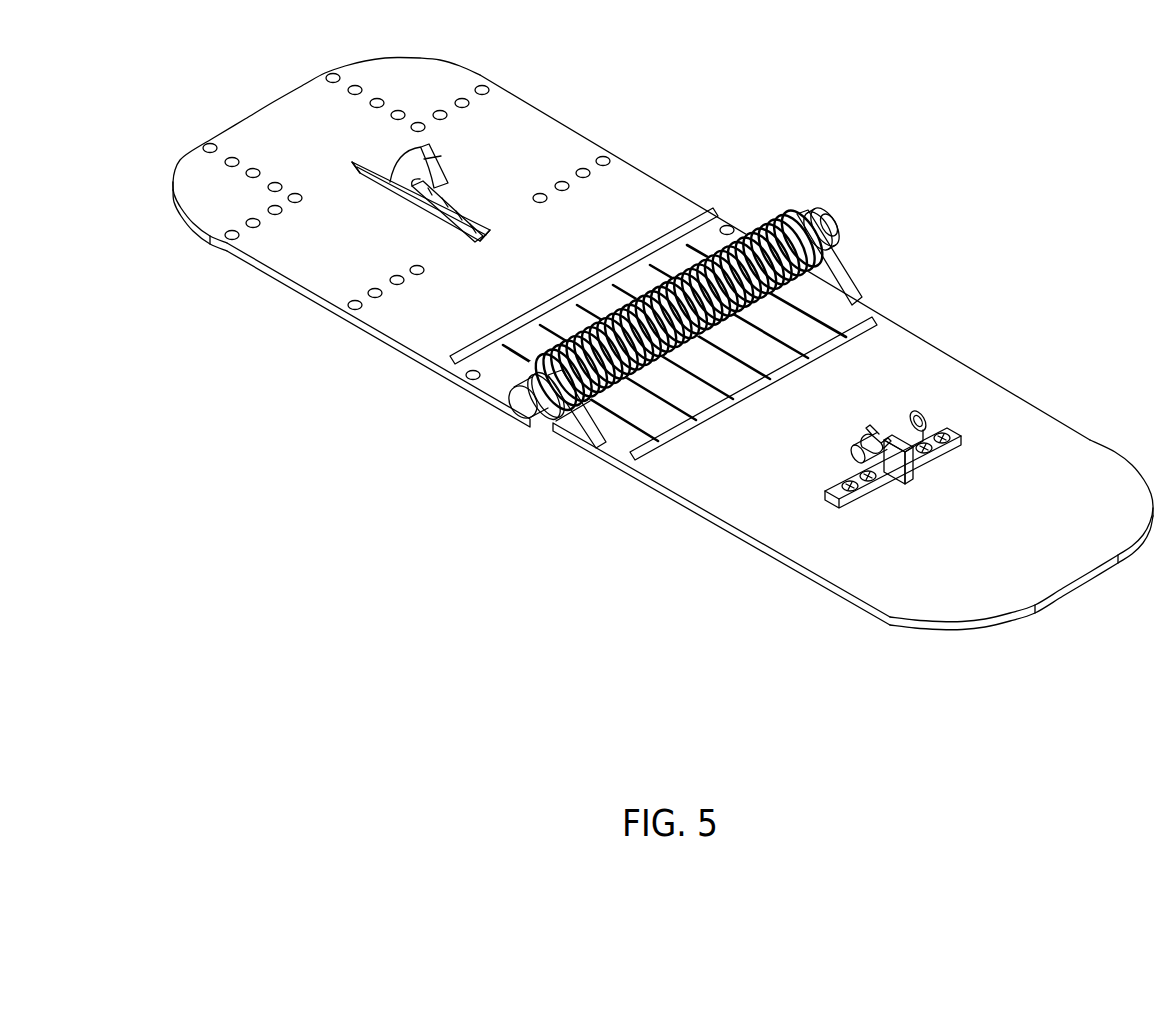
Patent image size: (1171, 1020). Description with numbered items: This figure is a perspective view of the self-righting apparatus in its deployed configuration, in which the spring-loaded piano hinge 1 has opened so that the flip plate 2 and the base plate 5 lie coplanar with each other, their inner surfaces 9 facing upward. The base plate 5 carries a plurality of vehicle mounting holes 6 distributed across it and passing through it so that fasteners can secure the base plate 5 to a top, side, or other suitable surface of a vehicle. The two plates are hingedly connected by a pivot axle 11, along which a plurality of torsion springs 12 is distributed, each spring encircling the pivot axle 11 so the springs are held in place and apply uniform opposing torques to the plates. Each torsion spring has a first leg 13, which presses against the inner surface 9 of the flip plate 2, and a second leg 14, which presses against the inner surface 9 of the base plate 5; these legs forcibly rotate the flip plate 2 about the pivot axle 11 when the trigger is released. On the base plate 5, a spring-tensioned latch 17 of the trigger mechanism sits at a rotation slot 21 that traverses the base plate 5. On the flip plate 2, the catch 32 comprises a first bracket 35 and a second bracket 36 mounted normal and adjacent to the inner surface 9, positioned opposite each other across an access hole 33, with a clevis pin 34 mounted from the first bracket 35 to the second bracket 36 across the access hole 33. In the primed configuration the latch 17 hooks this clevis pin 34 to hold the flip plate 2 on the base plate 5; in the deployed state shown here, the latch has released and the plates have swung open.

The spring-loaded piano hinge 1 is at (907, 101).
The flip plate 2 is at (1100, 381).
The base plate 5 is at (243, 71).
The plurality of vehicle mounting holes 6 is at (266, 203).
The inner surface 9 is at (368, 231).
The pivot axle 11 is at (529, 412).
The plurality of torsion springs 12 is at (540, 337).
The first leg 13 is at (863, 306).
The second leg 14 is at (671, 231).
The spring-tensioned latch 17 is at (437, 174).
The rotation slot 21 is at (370, 167).
The catch 32 is at (866, 404).
The access hole 33 is at (921, 473).
The clevis pin 34 is at (858, 457).
The first bracket 35 is at (850, 512).
The second bracket 36 is at (942, 430).